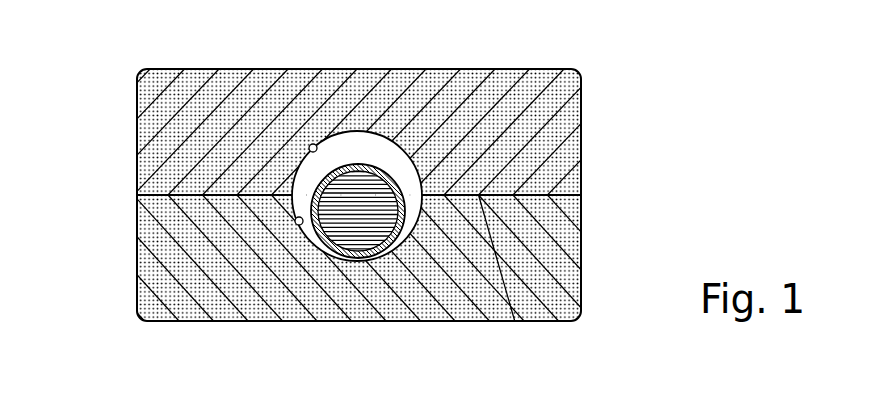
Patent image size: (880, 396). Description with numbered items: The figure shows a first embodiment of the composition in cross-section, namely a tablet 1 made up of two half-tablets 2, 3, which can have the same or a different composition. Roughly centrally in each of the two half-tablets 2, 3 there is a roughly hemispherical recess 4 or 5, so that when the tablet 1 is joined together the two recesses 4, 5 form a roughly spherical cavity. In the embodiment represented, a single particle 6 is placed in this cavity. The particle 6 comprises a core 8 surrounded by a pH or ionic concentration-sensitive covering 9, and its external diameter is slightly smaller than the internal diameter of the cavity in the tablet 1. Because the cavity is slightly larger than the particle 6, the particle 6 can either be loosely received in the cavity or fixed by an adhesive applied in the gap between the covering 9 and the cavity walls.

The tablet 1 is at (113, 153).
The half-tablet 2 is at (565, 154).
The half-tablet 3 is at (565, 243).
The hemispherical recess 4 is at (313, 150).
The hemispherical recess 5 is at (301, 222).
The particle 6 is at (380, 158).
The core 8 is at (360, 226).
The pH or ionic concentration-sensitive covering 9 is at (419, 232).